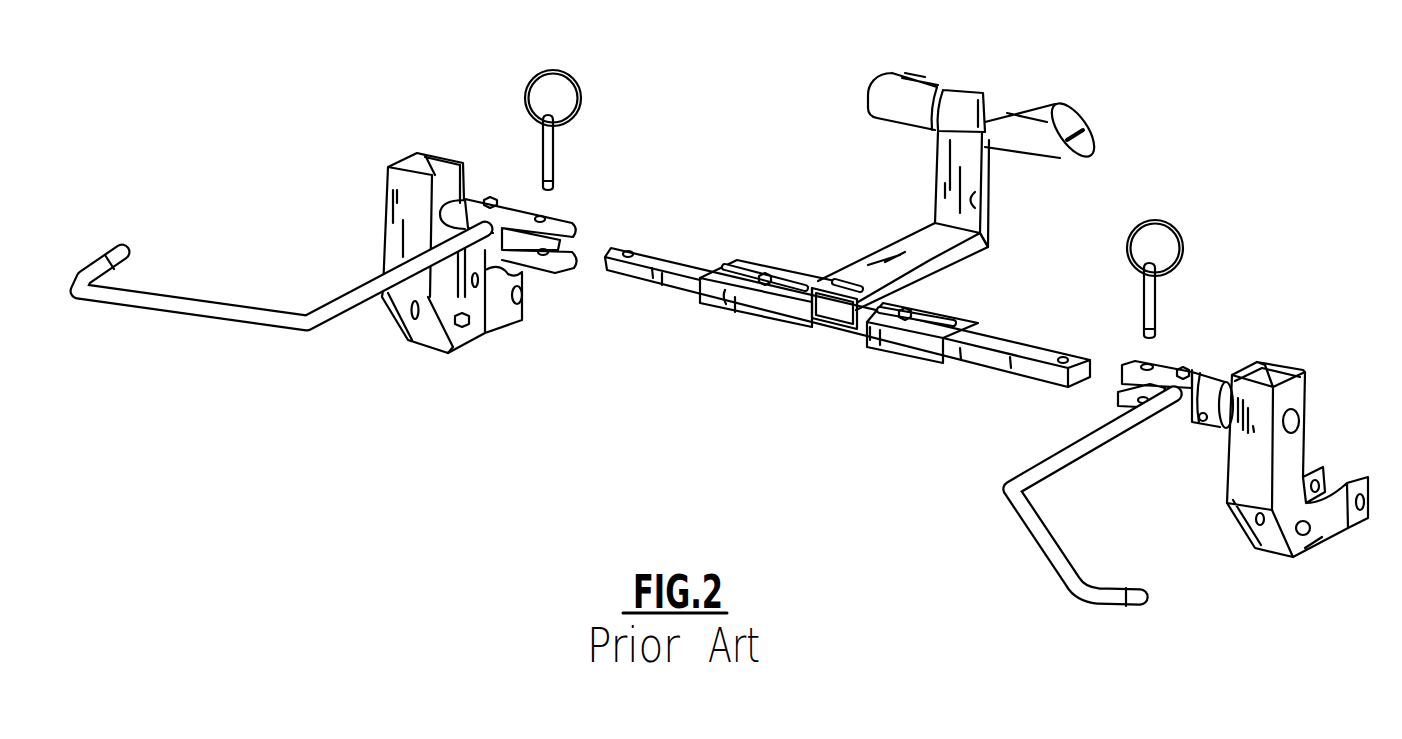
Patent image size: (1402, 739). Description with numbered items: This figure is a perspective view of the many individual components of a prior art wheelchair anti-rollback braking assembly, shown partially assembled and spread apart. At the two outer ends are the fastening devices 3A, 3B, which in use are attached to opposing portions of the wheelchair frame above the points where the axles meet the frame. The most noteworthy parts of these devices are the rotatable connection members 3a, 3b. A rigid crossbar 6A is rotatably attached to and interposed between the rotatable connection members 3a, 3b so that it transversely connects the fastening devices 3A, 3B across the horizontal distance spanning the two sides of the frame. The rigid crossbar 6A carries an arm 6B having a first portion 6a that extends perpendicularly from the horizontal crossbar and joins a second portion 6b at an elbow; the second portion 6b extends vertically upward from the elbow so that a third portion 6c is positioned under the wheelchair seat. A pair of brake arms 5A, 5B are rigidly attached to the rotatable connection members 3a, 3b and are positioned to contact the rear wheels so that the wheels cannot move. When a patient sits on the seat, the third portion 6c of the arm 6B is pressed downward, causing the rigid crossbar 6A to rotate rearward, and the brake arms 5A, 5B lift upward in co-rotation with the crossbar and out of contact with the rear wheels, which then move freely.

The fastening device 3A is at (412, 202).
The rotatable connection member 3a is at (520, 214).
The brake arm 5A is at (188, 300).
The rigid crossbar 6A is at (805, 318).
The arm 6B is at (960, 175).
The first portion 6a is at (933, 248).
The second portion 6b is at (982, 212).
The third portion 6c is at (975, 110).
The fastening device 3B is at (1243, 453).
The rotatable connection member 3b is at (1157, 377).
The brake arm 5B is at (1050, 549).